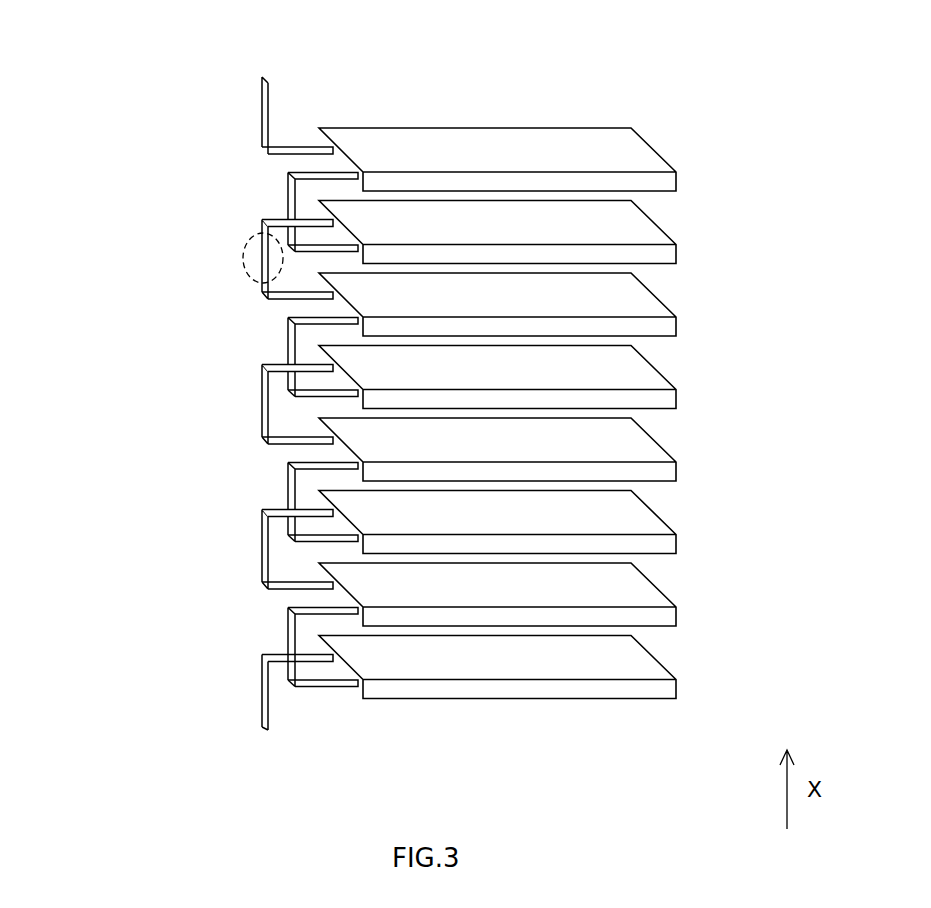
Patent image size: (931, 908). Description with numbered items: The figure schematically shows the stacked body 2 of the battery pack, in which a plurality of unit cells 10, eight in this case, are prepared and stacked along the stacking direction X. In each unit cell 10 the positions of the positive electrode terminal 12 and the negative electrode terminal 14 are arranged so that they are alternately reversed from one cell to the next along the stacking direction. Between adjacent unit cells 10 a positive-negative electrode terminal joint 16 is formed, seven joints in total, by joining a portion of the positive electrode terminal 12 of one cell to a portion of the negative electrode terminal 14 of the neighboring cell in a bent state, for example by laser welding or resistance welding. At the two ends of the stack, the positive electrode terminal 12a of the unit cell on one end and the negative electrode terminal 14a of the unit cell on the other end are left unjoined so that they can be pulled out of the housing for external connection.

The stacked body 2 is at (60, 64).
The unit cell 10 is at (570, 134).
The positive electrode terminal 12 is at (287, 207).
The positive electrode terminal 12a is at (261, 102).
The negative electrode terminal 14 is at (287, 182).
The negative electrode terminal 14a is at (262, 700).
The positive-negative electrode terminal joint 16 is at (250, 279).